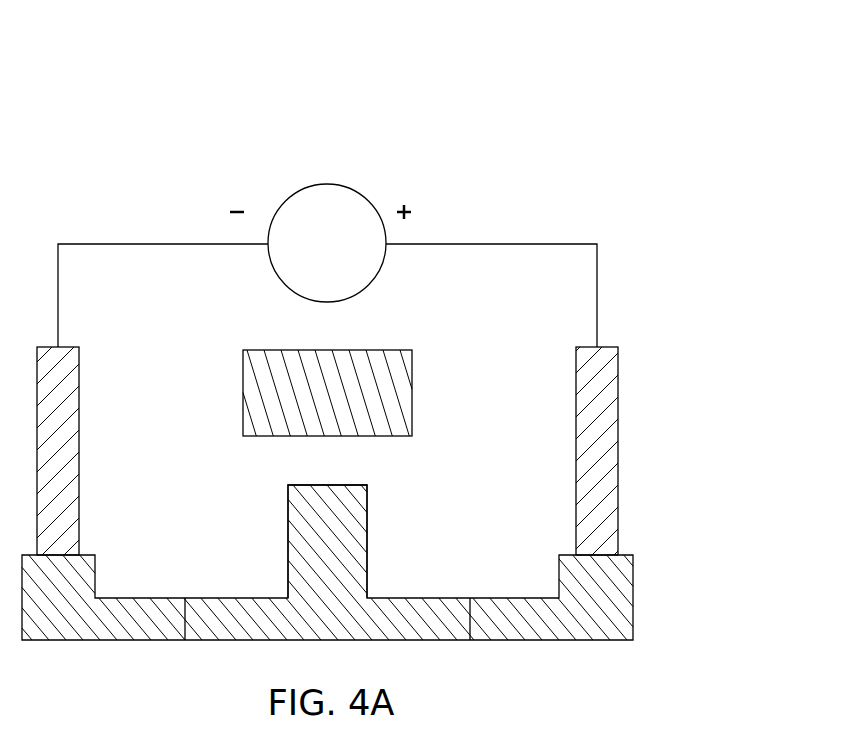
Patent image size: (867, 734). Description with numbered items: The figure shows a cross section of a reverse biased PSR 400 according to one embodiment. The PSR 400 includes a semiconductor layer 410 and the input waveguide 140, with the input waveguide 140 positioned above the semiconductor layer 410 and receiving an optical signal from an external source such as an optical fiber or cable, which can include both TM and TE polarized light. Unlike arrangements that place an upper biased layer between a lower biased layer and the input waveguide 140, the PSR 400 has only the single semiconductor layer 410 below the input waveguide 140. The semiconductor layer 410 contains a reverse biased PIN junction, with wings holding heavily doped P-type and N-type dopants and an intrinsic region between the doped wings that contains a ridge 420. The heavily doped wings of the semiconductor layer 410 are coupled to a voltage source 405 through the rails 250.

The PSR 400 is at (596, 93).
The voltage source 405 is at (328, 184).
The input waveguide 140 is at (363, 348).
The rails 250 is at (80, 422).
The semiconductor layer 410 is at (633, 613).
The ridge 420 is at (367, 528).